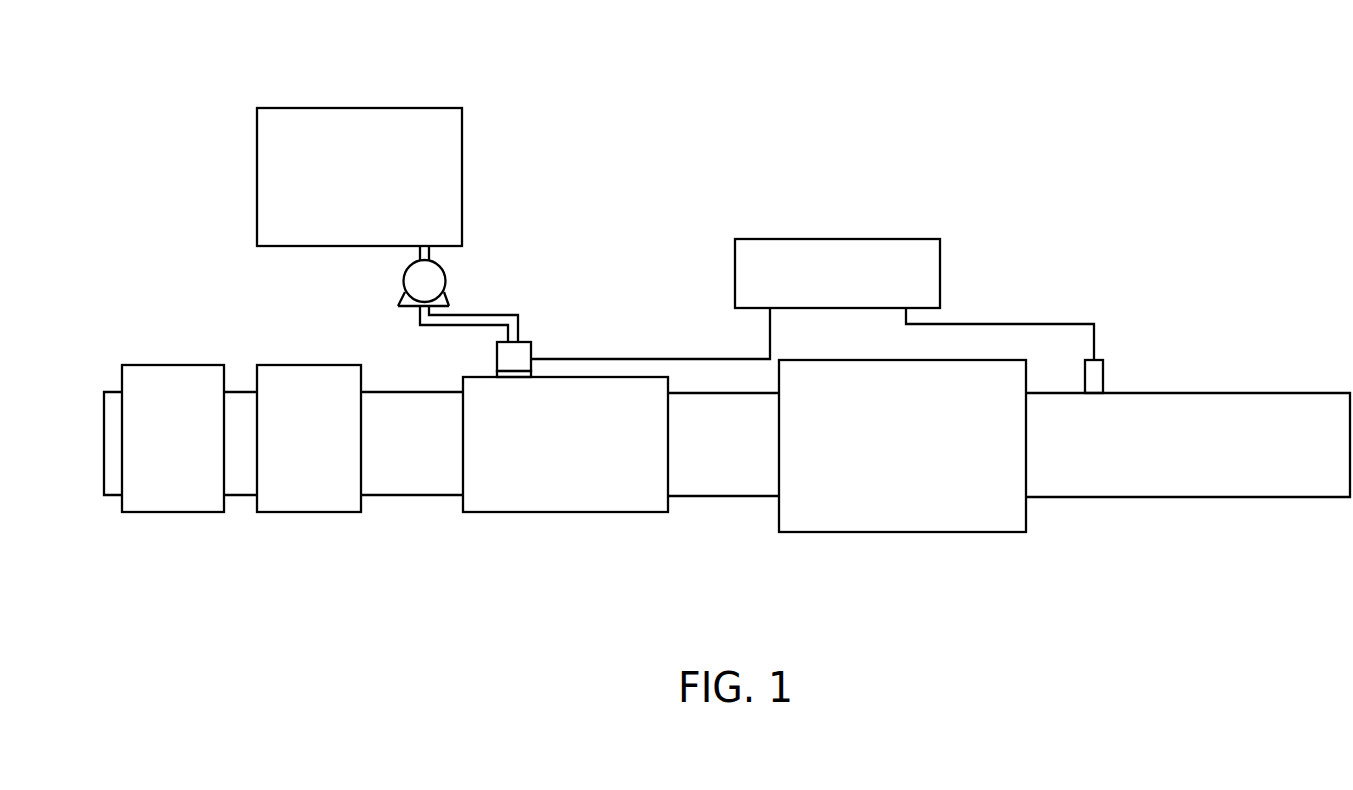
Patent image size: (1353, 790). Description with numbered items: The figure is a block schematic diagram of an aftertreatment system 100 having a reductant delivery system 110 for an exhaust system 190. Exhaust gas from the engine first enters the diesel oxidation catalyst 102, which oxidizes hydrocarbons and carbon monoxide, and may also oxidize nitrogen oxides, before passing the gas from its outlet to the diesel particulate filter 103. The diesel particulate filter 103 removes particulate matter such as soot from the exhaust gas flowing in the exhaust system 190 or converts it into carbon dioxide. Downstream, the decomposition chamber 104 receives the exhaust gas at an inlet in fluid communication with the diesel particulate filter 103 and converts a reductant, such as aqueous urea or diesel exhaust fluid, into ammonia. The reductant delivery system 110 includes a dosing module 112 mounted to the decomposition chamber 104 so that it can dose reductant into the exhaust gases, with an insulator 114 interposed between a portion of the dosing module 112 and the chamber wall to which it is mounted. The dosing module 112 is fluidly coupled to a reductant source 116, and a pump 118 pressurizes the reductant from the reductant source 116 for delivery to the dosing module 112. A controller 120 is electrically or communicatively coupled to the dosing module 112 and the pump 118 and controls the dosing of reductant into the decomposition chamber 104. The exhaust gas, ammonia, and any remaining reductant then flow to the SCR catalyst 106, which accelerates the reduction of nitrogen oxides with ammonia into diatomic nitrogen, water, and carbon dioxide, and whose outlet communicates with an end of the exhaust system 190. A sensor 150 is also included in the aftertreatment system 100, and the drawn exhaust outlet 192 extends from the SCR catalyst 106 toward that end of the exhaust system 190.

The aftertreatment system 100 is at (986, 300).
The diesel oxidation catalyst 102 is at (181, 513).
The diesel particulate filter 103 is at (318, 513).
The decomposition chamber 104 is at (660, 376).
The SCR catalyst 106 is at (911, 533).
The reductant delivery system 110 is at (628, 285).
The dosing module 112 is at (534, 350).
The insulator 114 is at (497, 373).
The reductant source 116 is at (421, 107).
The pump 118 is at (403, 284).
The controller 120 is at (825, 238).
The sensor 150 is at (1126, 371).
The exhaust system 190 is at (452, 586).
The tailpipe 192 is at (1272, 509).